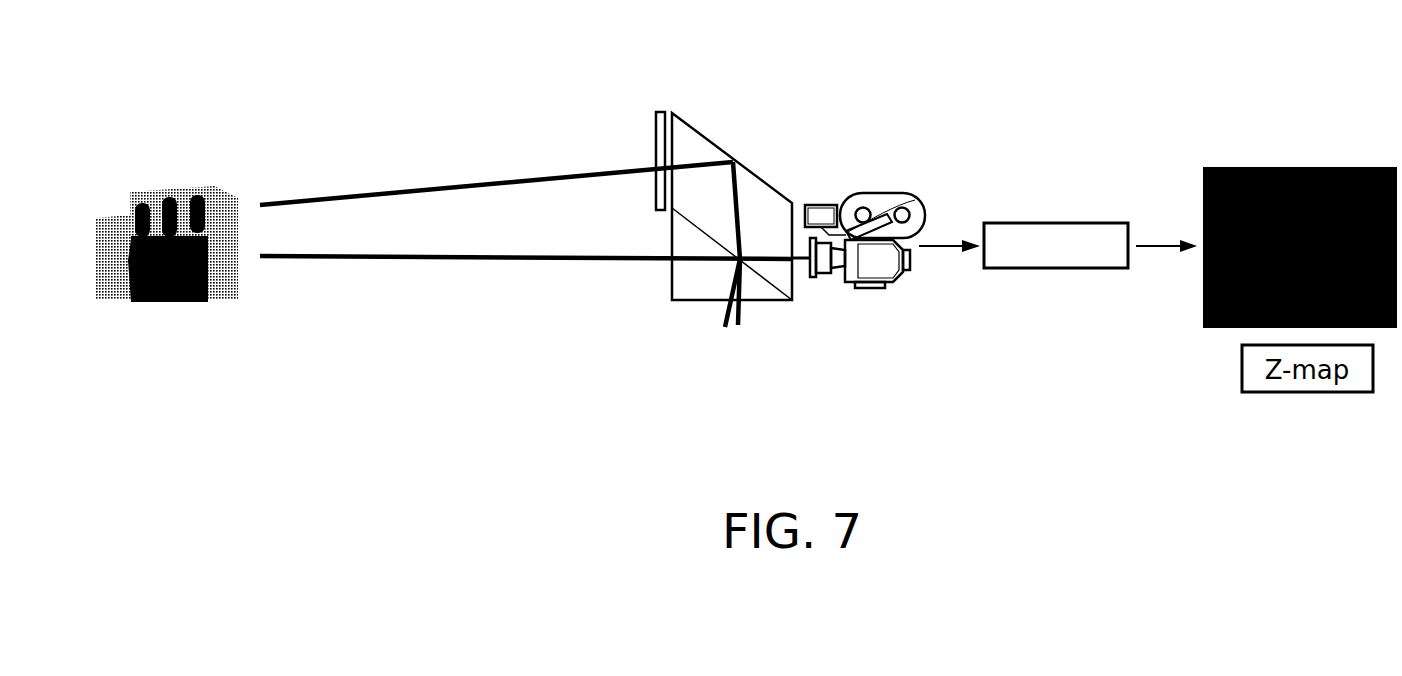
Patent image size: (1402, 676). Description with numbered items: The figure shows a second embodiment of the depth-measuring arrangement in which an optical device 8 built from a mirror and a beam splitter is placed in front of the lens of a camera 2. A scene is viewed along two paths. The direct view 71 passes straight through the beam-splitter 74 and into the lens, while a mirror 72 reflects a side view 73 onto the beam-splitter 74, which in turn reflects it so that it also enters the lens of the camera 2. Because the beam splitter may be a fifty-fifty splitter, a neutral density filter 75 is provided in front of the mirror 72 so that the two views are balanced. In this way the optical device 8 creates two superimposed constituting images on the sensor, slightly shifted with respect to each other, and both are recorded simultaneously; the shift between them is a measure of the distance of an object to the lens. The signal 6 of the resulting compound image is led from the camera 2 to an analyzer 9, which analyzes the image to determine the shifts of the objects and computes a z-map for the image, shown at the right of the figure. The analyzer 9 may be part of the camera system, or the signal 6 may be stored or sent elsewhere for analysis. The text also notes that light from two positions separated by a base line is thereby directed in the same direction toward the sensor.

The camera 2 is at (872, 290).
The signal 6 is at (947, 250).
The optical device 8 is at (632, 331).
The analyzer 9 is at (1058, 232).
The direct view 71 is at (465, 262).
The mirror 72 is at (734, 160).
The side view 73 is at (470, 186).
The beam-splitter 74 is at (773, 308).
The neutral density filter 75 is at (662, 116).